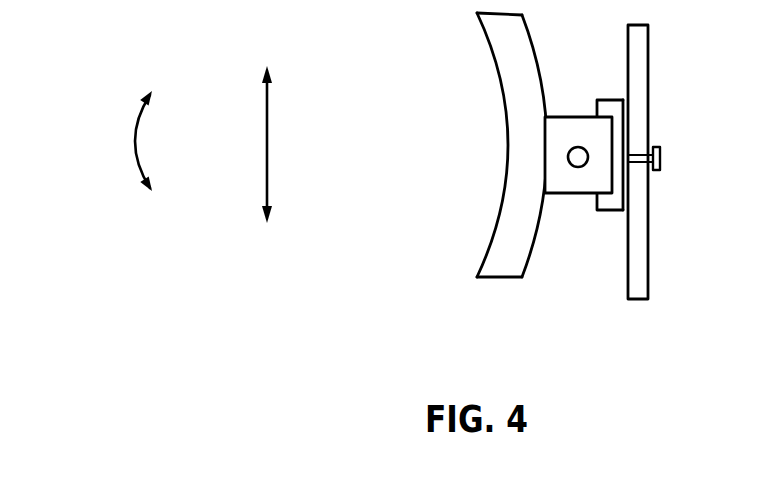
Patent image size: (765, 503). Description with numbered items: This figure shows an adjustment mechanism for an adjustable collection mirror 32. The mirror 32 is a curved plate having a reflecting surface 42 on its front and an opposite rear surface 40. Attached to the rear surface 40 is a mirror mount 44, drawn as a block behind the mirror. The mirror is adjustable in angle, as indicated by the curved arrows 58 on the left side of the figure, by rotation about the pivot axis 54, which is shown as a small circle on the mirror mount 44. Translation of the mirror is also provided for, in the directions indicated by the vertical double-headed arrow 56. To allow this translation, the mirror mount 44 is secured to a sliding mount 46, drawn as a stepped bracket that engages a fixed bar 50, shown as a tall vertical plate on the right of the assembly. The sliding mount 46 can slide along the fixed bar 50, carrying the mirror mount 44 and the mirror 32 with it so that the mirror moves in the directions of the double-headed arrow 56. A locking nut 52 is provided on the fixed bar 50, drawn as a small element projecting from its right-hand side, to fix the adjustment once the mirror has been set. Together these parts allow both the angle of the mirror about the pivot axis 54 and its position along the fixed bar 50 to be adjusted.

The collection mirror 32 is at (479, 145).
The rear surface 40 is at (568, 172).
The reflecting surface 42 is at (497, 230).
The mirror mount 44 is at (530, 121).
The sliding mount 46 is at (617, 213).
The fixed bar 50 is at (652, 45).
The locking nut 52 is at (658, 173).
The pivot axis 54 is at (568, 156).
The double-headed arrow 56 is at (263, 138).
The arrows 58 is at (132, 145).